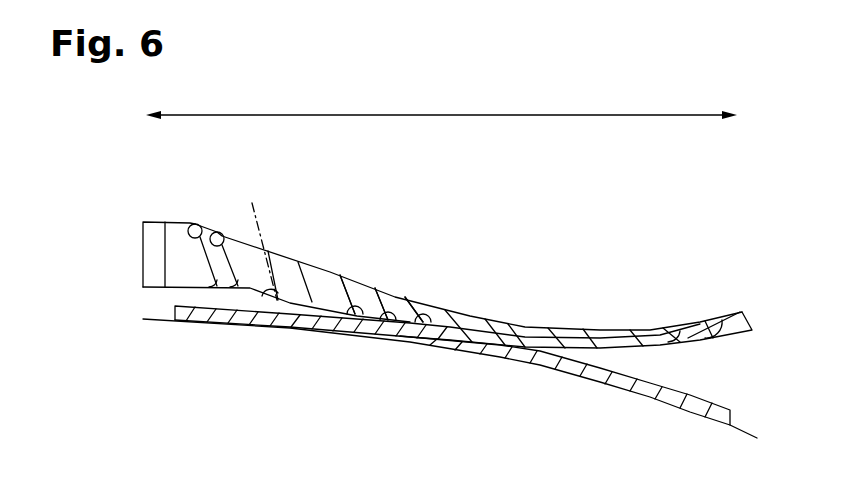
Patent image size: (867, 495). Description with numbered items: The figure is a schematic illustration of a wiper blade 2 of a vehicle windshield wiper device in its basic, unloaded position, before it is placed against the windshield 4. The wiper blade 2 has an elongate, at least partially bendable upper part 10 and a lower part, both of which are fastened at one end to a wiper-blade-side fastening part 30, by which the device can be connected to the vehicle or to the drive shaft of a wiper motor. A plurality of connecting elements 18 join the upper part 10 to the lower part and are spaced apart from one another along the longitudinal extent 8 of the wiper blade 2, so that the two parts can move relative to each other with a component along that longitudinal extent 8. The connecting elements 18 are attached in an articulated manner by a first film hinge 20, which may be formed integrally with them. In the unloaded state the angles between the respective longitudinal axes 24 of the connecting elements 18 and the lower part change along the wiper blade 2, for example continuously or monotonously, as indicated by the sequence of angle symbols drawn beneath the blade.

The wiper blade 2 is at (612, 246).
The windshield 4 is at (616, 383).
The longitudinal extent 8 is at (440, 115).
The upper part 10 is at (553, 330).
The connecting elements 18 is at (362, 288).
The first film hinge 20 is at (197, 224).
The longitudinal axes 24 is at (278, 235).
The wiper-blade-side fastening part 30 is at (143, 262).